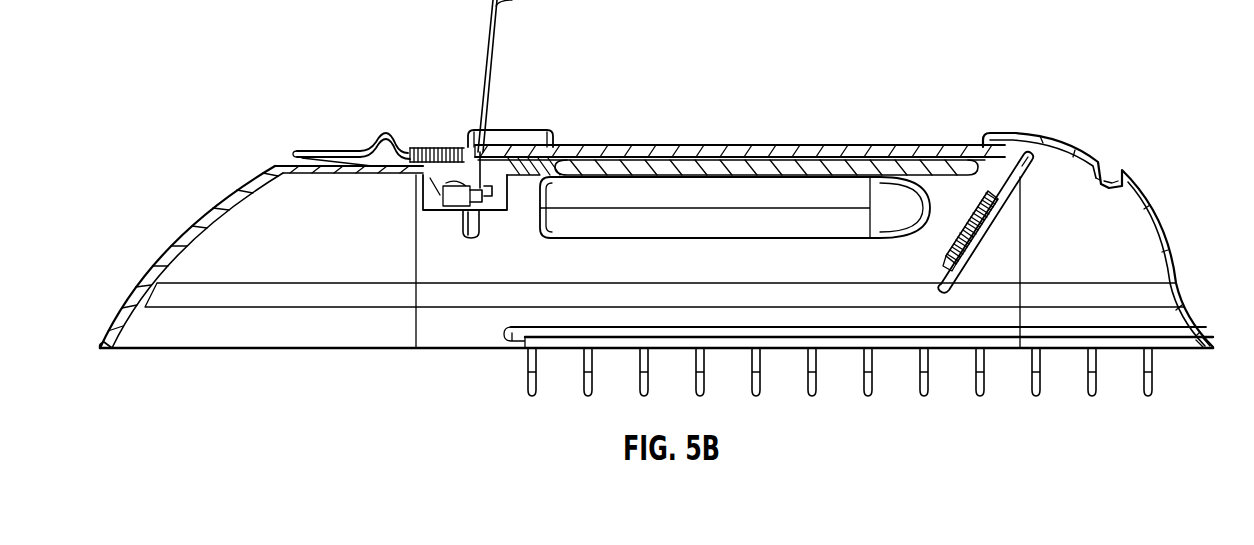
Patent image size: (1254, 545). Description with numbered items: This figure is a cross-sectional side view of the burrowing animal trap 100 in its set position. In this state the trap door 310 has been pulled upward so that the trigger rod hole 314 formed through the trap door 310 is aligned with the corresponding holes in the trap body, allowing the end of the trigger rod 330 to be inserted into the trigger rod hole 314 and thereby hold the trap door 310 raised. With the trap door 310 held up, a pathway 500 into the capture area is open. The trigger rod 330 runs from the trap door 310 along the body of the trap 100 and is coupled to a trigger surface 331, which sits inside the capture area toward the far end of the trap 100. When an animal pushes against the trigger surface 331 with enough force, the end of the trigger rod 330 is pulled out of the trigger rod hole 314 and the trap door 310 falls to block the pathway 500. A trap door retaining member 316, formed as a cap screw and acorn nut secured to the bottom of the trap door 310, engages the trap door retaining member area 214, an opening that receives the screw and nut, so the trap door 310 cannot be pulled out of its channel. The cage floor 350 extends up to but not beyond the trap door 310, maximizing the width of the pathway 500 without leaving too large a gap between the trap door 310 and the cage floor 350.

The trap 100 is at (162, 32).
The pathway 500 is at (266, 374).
The trap door 310 is at (491, 62).
The trigger rod hole 314 is at (463, 188).
The trap door retaining member 316 is at (455, 195).
The trap door retaining member area 214 is at (485, 182).
The trigger rod 330 is at (760, 151).
The trigger surface 331 is at (1005, 239).
The cage floor 350 is at (1053, 409).